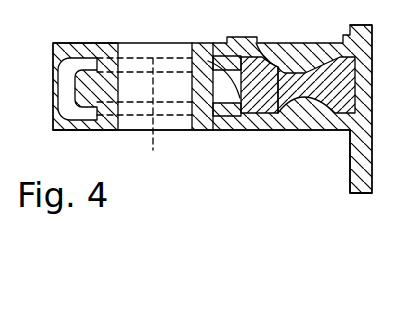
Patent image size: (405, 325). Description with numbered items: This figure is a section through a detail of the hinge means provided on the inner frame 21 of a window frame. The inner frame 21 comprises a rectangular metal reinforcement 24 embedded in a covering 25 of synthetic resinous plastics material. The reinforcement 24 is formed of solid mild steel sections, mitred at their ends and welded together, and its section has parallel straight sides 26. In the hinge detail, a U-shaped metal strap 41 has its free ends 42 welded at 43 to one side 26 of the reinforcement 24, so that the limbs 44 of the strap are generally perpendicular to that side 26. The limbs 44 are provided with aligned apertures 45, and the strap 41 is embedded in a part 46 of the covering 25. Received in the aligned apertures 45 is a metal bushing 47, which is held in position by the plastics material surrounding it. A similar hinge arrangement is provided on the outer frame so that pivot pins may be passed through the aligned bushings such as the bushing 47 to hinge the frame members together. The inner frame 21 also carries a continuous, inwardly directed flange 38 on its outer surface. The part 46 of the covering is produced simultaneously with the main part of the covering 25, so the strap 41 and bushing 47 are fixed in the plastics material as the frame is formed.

The inner frame 21 is at (376, 88).
The reinforcement 24 is at (283, 128).
The covering 25 is at (297, 52).
The parallel straight sides 26 is at (209, 57).
The inwardly directed flange 38 is at (360, 158).
The U-shaped metal strap 41 is at (75, 132).
The free ends 42 is at (220, 57).
The weld 43 is at (262, 48).
The limbs 44 is at (166, 133).
The aligned apertures 45 is at (117, 107).
The part of the covering 46 is at (60, 50).
The metal bushing 47 is at (193, 87).